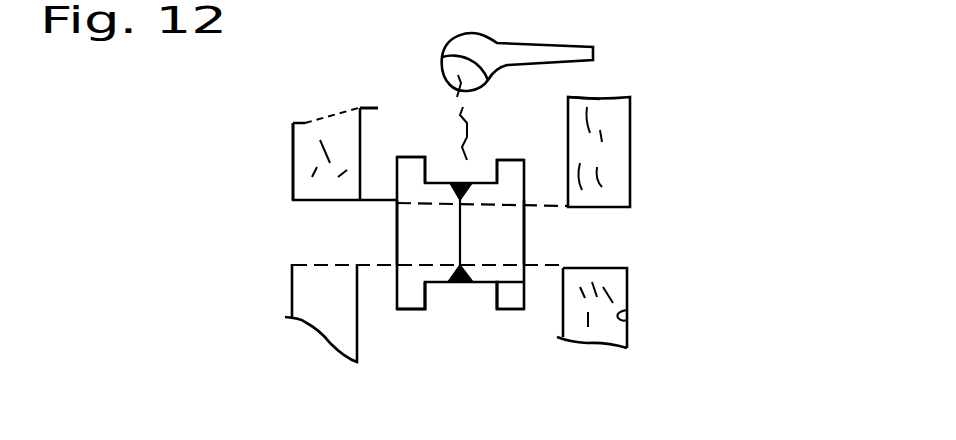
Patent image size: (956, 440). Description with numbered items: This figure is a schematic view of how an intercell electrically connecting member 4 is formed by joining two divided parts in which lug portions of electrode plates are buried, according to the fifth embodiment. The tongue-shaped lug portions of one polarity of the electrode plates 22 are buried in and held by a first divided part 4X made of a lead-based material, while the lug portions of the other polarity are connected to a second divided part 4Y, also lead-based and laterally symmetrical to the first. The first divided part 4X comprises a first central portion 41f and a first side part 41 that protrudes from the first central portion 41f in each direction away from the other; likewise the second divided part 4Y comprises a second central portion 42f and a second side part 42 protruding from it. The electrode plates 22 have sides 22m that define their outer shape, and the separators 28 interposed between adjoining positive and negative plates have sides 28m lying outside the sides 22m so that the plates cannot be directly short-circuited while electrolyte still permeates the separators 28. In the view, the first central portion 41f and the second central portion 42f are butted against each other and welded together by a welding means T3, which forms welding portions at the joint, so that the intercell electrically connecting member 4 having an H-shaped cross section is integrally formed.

The intercell electrically connecting member 4 is at (515, 320).
The first side part 41 is at (413, 168).
The second side part 42 is at (512, 168).
The first divided part 4X is at (435, 283).
The second divided part 4Y is at (493, 317).
The first central portion 41f is at (442, 237).
The second central portion 42f is at (478, 237).
The electrode plate 22 is at (290, 198).
The side of electrode plate 22m is at (298, 120).
The separator 28 is at (330, 135).
The side of separator 28m is at (362, 142).
The welding means T3 is at (500, 50).